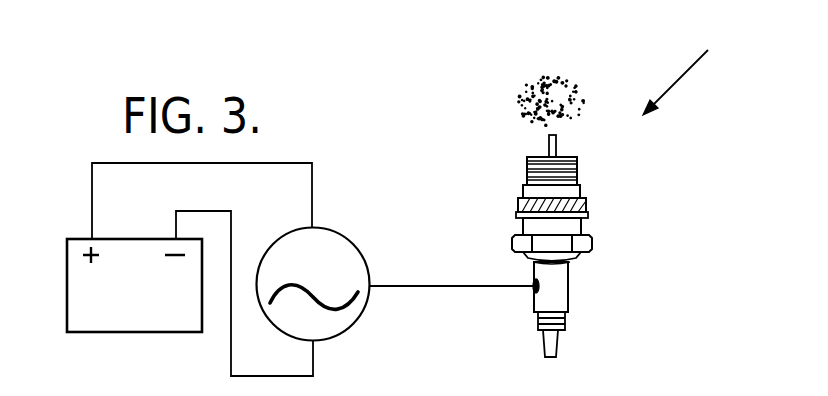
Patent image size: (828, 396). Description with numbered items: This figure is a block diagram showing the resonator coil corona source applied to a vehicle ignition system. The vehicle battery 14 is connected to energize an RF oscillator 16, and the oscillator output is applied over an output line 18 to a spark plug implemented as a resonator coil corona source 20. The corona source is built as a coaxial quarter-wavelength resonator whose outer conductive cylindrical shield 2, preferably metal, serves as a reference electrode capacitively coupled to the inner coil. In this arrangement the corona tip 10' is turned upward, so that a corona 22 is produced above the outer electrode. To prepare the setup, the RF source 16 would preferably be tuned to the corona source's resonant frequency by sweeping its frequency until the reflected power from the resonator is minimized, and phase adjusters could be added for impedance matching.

The vehicle battery 14 is at (73, 247).
The RF oscillator 16 is at (361, 247).
The output line 18 is at (436, 284).
The corona 22 is at (533, 95).
The corona tip 10' is at (571, 198).
The outer conductive cylindrical shield 2 is at (578, 163).
The resonator coil corona source 20 is at (691, 72).